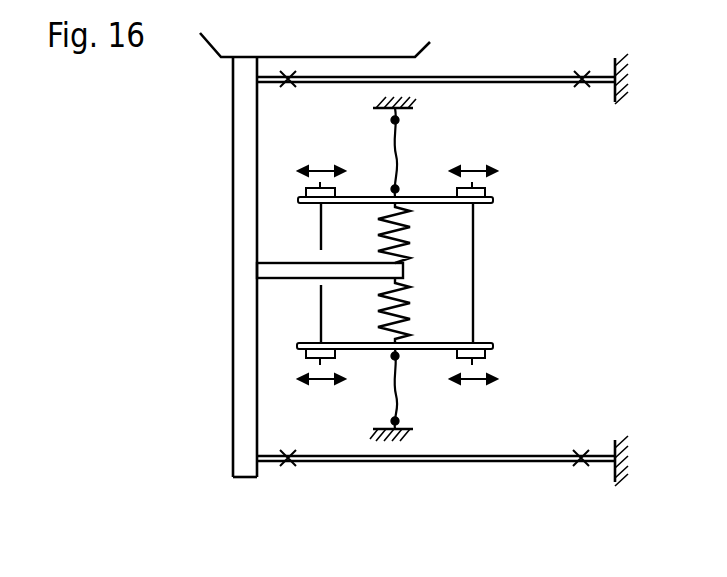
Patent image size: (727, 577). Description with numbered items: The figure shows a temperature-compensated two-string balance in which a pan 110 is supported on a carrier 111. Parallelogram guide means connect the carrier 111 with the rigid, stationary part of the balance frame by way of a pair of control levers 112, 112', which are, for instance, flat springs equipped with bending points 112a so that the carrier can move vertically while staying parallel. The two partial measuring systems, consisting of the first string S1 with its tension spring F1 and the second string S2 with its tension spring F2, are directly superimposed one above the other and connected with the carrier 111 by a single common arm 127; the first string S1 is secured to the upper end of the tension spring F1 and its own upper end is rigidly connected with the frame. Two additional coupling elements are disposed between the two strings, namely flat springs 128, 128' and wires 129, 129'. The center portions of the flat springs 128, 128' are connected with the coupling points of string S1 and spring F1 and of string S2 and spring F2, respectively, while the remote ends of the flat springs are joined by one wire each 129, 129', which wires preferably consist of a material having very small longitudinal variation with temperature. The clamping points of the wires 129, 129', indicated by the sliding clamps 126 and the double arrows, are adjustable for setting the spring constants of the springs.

The pan 110 is at (354, 56).
The carrier 111 is at (232, 476).
The control lever 112 is at (442, 71).
The control lever 112' is at (442, 474).
The bending point 112a is at (290, 69).
The sliding block 126 is at (487, 184).
The common arm 127 is at (285, 280).
The flat spring 128 is at (418, 201).
The flat spring 128' is at (419, 345).
The wire 129 is at (293, 273).
The wire 129' is at (509, 273).
The first string S1 is at (401, 150).
The second string S2 is at (401, 400).
The tension spring F1 is at (412, 237).
The tension spring F2 is at (412, 318).